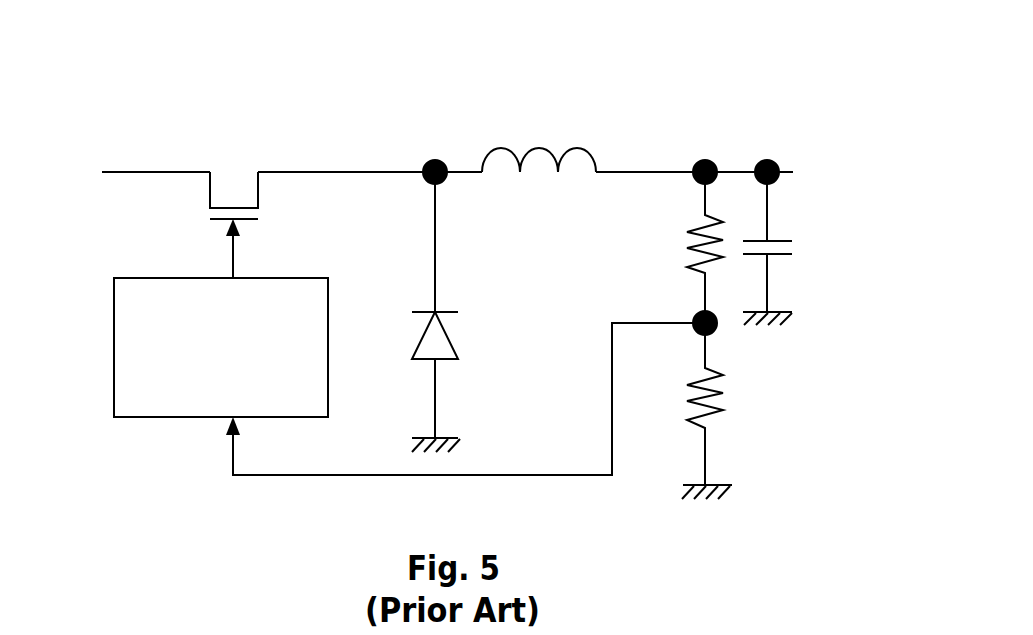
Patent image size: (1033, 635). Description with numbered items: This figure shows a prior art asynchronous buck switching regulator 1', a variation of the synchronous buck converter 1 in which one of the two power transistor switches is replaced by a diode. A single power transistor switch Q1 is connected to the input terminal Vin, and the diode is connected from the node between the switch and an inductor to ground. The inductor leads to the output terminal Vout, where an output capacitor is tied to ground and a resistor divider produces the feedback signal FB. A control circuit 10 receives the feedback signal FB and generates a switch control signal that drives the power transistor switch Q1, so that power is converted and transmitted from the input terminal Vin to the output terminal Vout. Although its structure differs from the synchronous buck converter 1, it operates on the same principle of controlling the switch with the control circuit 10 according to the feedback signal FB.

The asynchronous buck switching regulator 1' is at (452, 249).
The buck converter 1 is at (452, 249).
The control circuit 10 is at (237, 386).
The power transistor switch Q1 is at (234, 208).
The input terminal Vin is at (123, 171).
The output terminal Vout is at (817, 171).
The feedback signal FB is at (678, 307).